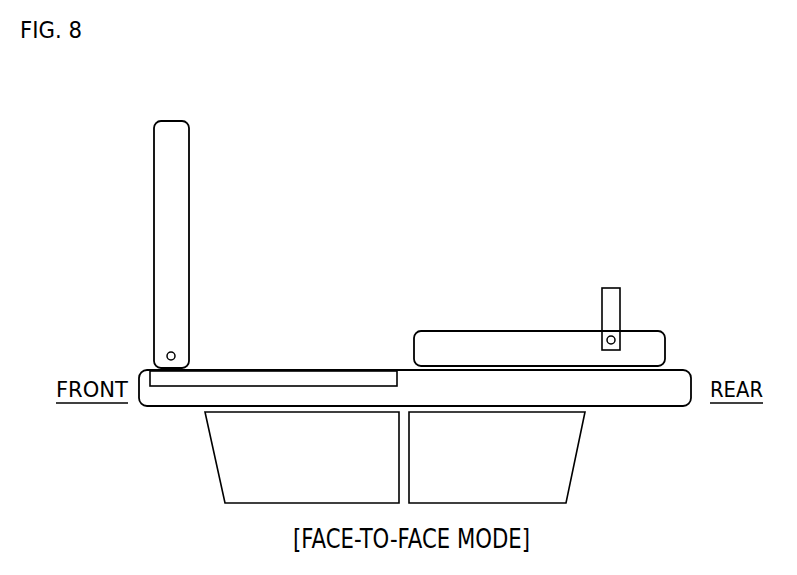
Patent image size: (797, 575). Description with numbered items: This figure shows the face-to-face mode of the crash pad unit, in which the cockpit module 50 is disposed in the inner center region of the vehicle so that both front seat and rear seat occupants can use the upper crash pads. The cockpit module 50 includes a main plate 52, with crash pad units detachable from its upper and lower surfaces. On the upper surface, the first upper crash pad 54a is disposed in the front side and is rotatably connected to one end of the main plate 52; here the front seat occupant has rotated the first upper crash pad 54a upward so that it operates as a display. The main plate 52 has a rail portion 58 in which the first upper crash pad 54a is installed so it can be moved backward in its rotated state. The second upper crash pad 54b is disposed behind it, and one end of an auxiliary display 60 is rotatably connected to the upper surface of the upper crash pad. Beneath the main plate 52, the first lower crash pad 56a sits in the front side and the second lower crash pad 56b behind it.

The cockpit module 50 is at (404, 286).
The main plate 52 is at (472, 388).
The first upper crash pad 54a is at (173, 247).
The second upper crash pad 54b is at (530, 345).
The first lower crash pad 56a is at (237, 457).
The second lower crash pad 56b is at (547, 458).
The rail portion 58 is at (297, 382).
The auxiliary display 60 is at (612, 302).